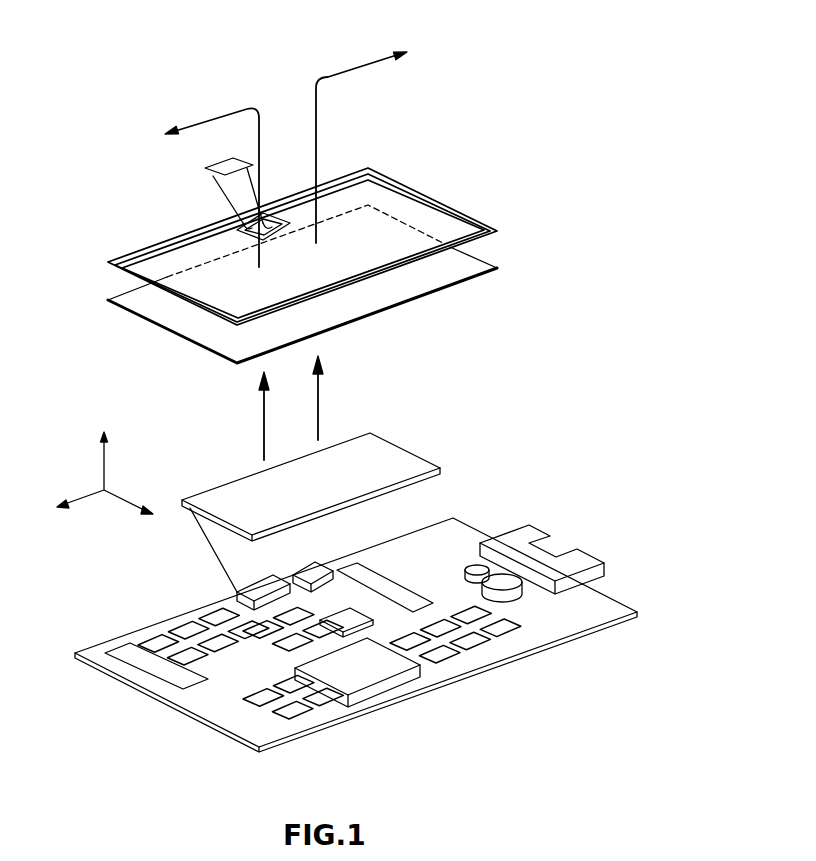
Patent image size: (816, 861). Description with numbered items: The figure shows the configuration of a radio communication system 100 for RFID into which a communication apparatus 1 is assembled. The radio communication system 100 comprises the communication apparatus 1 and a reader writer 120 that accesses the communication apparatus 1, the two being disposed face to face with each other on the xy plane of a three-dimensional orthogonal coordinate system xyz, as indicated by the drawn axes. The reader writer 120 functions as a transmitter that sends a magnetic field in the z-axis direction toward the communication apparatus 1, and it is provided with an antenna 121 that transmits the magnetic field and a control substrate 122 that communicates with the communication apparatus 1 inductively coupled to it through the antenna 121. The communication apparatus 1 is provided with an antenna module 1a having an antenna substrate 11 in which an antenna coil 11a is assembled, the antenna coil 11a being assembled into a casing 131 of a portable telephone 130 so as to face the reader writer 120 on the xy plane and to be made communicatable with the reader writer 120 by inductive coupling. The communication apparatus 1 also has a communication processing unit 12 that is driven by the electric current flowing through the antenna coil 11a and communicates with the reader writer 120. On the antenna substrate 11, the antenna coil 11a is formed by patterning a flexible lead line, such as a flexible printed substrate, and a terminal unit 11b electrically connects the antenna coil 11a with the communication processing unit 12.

The radio communication system 100 is at (328, 26).
The communication apparatus 1 is at (583, 30).
The antenna module 1a is at (305, 226).
The antenna substrate 11 is at (305, 226).
The antenna coil 11a is at (414, 197).
The communication processing unit 12 is at (210, 166).
The terminal unit 11b is at (235, 216).
The portable telephone 130 is at (325, 284).
The casing 131 is at (368, 309).
The reader writer 120 is at (665, 407).
The antenna 121 is at (363, 447).
The control substrate 122 is at (467, 538).